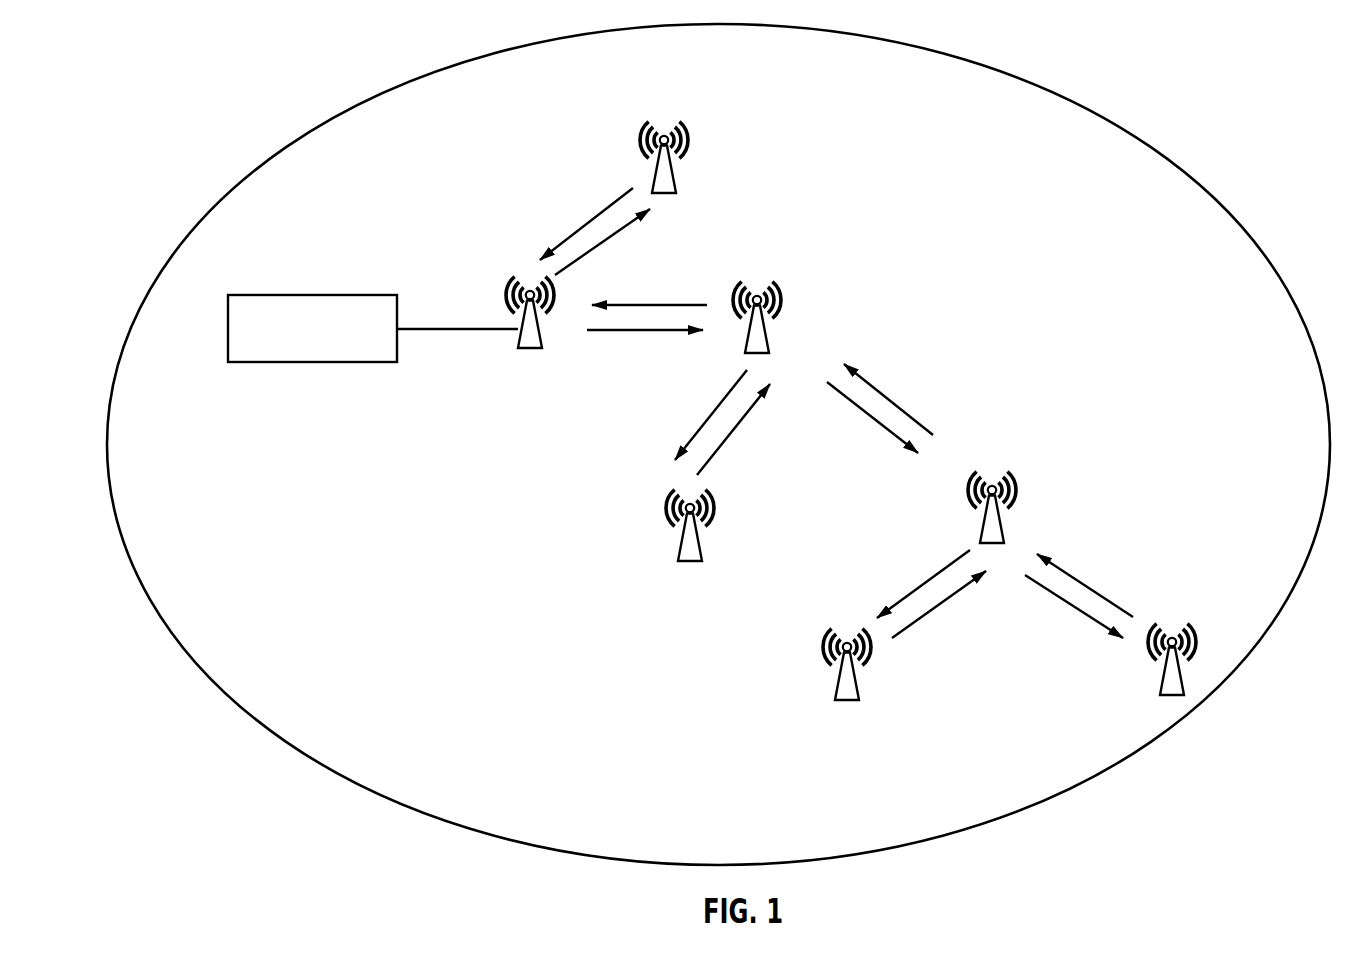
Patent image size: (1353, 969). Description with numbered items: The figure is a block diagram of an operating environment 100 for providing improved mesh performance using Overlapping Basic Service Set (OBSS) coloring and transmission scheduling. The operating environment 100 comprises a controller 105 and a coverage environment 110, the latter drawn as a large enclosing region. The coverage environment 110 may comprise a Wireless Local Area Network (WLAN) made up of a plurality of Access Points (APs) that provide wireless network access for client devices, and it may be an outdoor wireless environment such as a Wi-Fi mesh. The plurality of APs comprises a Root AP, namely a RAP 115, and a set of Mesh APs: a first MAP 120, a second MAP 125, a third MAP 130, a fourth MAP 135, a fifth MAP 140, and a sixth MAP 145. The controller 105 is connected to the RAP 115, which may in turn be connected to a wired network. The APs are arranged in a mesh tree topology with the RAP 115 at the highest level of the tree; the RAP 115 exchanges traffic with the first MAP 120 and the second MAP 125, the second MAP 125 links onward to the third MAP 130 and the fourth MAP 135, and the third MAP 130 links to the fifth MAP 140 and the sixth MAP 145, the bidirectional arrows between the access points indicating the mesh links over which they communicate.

The operating environment 100 is at (243, 84).
The controller 105 is at (300, 295).
The coverage environment 110 is at (1157, 151).
The root AP (RAP) 115 is at (515, 340).
The first MAP 120 is at (677, 178).
The second MAP 125 is at (770, 344).
The third MAP 130 is at (1004, 532).
The fourth MAP 135 is at (703, 558).
The fifth MAP 140 is at (860, 697).
The sixth MAP 145 is at (1161, 680).